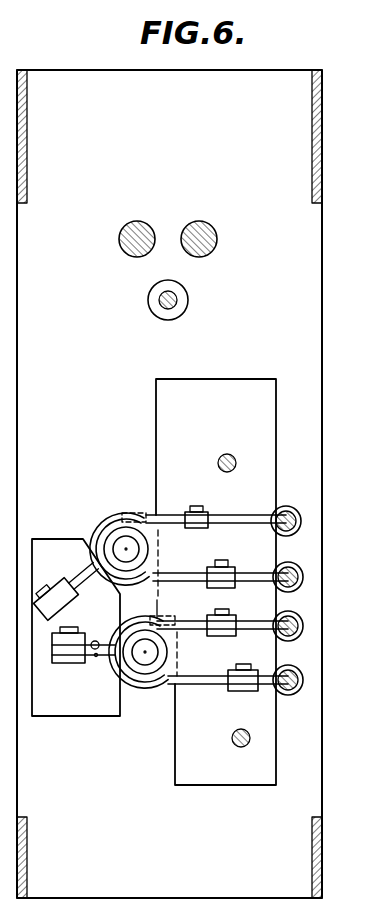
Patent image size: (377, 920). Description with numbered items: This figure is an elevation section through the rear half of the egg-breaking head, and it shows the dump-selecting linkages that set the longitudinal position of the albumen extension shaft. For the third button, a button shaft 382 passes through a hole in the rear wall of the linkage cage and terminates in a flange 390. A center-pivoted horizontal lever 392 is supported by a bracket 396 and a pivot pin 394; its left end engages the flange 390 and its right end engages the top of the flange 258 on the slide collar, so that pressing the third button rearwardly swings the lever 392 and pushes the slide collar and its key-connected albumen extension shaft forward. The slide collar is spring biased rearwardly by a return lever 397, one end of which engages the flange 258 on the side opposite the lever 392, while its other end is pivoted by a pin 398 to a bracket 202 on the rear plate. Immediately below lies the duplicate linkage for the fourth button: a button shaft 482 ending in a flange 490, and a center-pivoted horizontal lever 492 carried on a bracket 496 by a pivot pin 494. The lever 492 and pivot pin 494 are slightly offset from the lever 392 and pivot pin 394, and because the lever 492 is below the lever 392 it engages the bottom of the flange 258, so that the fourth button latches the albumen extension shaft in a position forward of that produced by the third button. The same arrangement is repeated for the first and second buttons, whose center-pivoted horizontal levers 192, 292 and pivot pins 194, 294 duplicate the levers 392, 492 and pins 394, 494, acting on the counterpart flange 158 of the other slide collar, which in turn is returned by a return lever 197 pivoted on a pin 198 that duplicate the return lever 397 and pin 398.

The rotary cam member 158 is at (127, 512).
The center-pivoted horizontal lever 192 is at (262, 513).
The pivot pin 194 is at (201, 509).
The return lever 197 is at (99, 526).
The pin 198 is at (49, 586).
The bracket 202 is at (85, 690).
The flange 258 is at (152, 692).
The center-pivoted horizontal lever 292 is at (262, 578).
The pivot pin 294 is at (227, 566).
The button shaft 382 is at (302, 634).
The flange 390 is at (301, 620).
The center-pivoted horizontal lever 392 is at (258, 618).
The pivot pin 394 is at (250, 608).
The bracket 396 is at (222, 636).
The return lever 397 is at (120, 684).
The pin 398 is at (71, 632).
The button shaft 482 is at (302, 688).
The flange 490 is at (303, 670).
The center-pivoted horizontal lever 492 is at (268, 664).
The pivot pin 494 is at (245, 669).
The bracket 496 is at (245, 690).